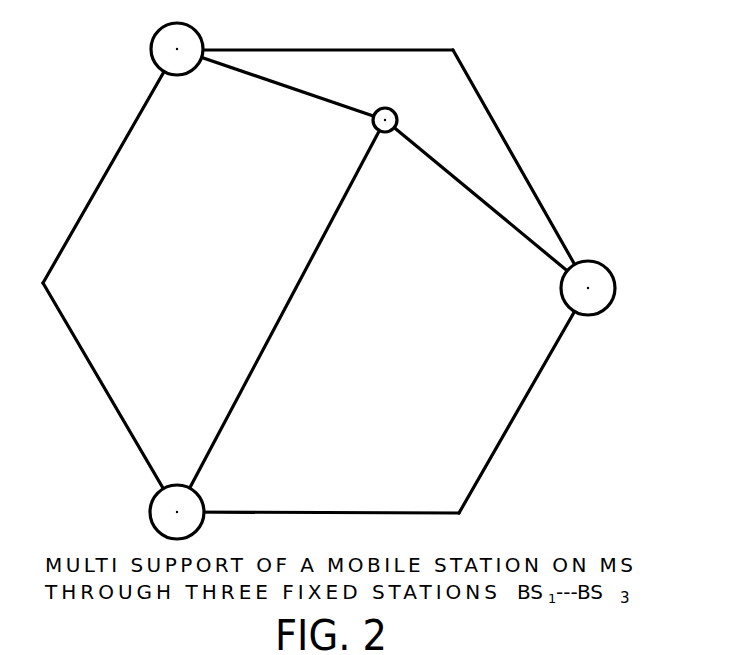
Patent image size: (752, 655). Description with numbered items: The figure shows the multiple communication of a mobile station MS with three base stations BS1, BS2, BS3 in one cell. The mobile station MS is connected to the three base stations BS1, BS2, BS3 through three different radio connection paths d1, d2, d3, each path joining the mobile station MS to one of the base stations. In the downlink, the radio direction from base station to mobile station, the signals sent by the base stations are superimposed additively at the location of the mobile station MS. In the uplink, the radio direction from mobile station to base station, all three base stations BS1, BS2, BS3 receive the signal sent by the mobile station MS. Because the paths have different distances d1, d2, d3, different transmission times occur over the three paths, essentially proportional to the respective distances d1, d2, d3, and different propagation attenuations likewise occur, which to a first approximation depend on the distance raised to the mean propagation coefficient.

The base station BS1 is at (154, 42).
The base station BS2 is at (202, 515).
The base station BS3 is at (615, 285).
The mobile station MS is at (399, 110).
The radio connection path d1 is at (281, 84).
The radio connection path d2 is at (281, 316).
The radio connection path d3 is at (486, 204).